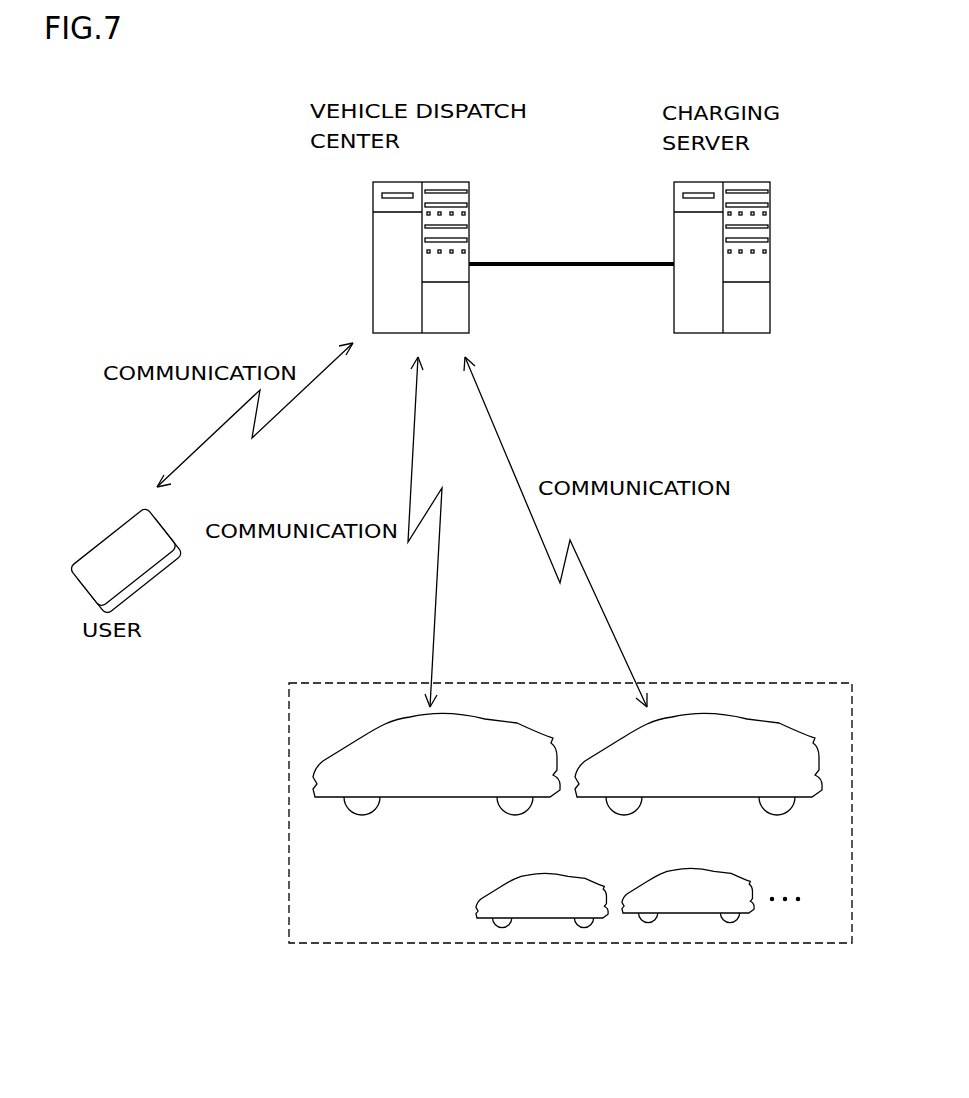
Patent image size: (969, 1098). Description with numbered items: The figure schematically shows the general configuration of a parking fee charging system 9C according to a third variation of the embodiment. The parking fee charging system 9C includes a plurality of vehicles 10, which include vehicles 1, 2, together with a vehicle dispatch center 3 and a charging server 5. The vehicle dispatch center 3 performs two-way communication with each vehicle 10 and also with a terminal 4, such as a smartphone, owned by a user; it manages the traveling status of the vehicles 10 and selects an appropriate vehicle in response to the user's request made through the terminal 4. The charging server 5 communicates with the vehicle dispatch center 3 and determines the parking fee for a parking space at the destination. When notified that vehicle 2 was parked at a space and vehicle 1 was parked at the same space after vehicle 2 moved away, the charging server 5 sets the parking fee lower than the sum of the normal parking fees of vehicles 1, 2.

The vehicle 1 is at (512, 722).
The vehicle 2 is at (772, 722).
The vehicle dispatch center 3 is at (463, 182).
The terminal 4 is at (168, 527).
The charging server 5 is at (764, 182).
The parking fee charging system 9C is at (600, 99).
The plurality of vehicles 10 is at (782, 683).